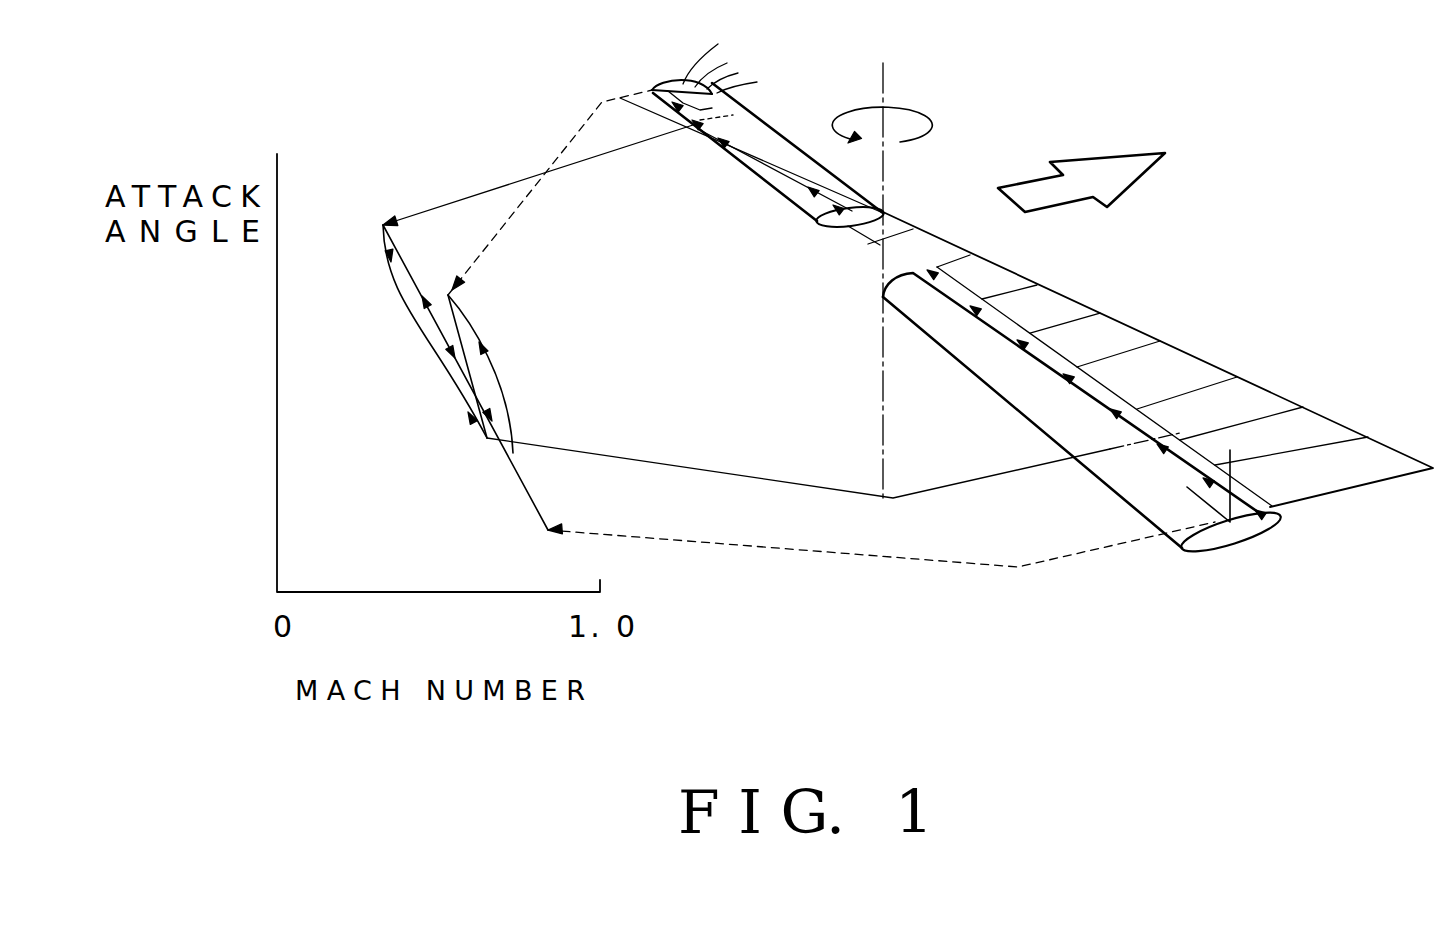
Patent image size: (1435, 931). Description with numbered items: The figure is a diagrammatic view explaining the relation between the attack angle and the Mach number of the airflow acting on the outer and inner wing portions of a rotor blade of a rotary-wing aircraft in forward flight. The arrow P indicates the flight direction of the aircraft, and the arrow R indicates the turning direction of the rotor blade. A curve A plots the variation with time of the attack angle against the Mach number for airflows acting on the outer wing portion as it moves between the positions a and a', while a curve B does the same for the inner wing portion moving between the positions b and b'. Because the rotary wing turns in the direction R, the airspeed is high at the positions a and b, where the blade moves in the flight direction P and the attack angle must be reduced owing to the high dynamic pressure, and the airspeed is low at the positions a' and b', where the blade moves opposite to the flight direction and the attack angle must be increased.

The position of outer wing portion on advancing side a is at (1231, 510).
The position of outer wing portion on retreating side a' is at (702, 69).
The position of inner wing portion on advancing side b is at (1140, 380).
The position of inner wing portion on retreating side b' is at (752, 156).
The curve A is at (550, 271).
The curve B is at (538, 327).
The turning direction of the rotor blade R is at (882, 280).
The flight direction of the rotary-wing aircraft P is at (1206, 168).